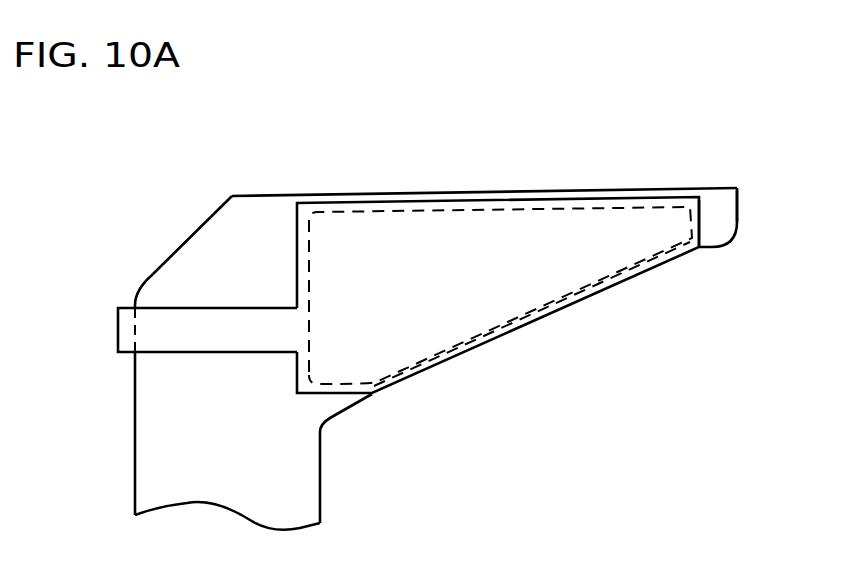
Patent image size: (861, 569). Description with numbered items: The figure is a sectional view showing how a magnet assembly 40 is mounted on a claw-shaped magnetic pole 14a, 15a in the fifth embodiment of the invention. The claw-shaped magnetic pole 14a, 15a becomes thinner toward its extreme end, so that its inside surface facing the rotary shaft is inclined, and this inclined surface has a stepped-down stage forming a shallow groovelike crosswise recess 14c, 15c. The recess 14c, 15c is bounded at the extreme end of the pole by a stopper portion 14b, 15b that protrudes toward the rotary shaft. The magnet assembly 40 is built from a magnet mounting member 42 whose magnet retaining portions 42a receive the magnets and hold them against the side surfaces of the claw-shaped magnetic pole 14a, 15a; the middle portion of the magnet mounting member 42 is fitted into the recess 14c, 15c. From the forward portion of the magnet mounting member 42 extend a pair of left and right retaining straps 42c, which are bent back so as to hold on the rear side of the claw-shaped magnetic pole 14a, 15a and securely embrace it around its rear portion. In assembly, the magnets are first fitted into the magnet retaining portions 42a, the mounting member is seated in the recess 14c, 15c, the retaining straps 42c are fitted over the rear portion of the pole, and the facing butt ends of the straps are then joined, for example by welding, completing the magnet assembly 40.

The magnet assembly 40 is at (540, 158).
The magnet mounting member 42 is at (531, 322).
The magnet retaining portion 42a is at (622, 240).
The retaining strap 42c is at (185, 321).
The claw-shaped magnetic pole 14a is at (484, 164).
The claw-shaped magnetic pole 15a is at (425, 193).
The stopper portion 14b is at (763, 273).
The stopper portion 15b is at (723, 240).
The crosswise recess 14c is at (500, 334).
The crosswise recess 15c is at (468, 338).